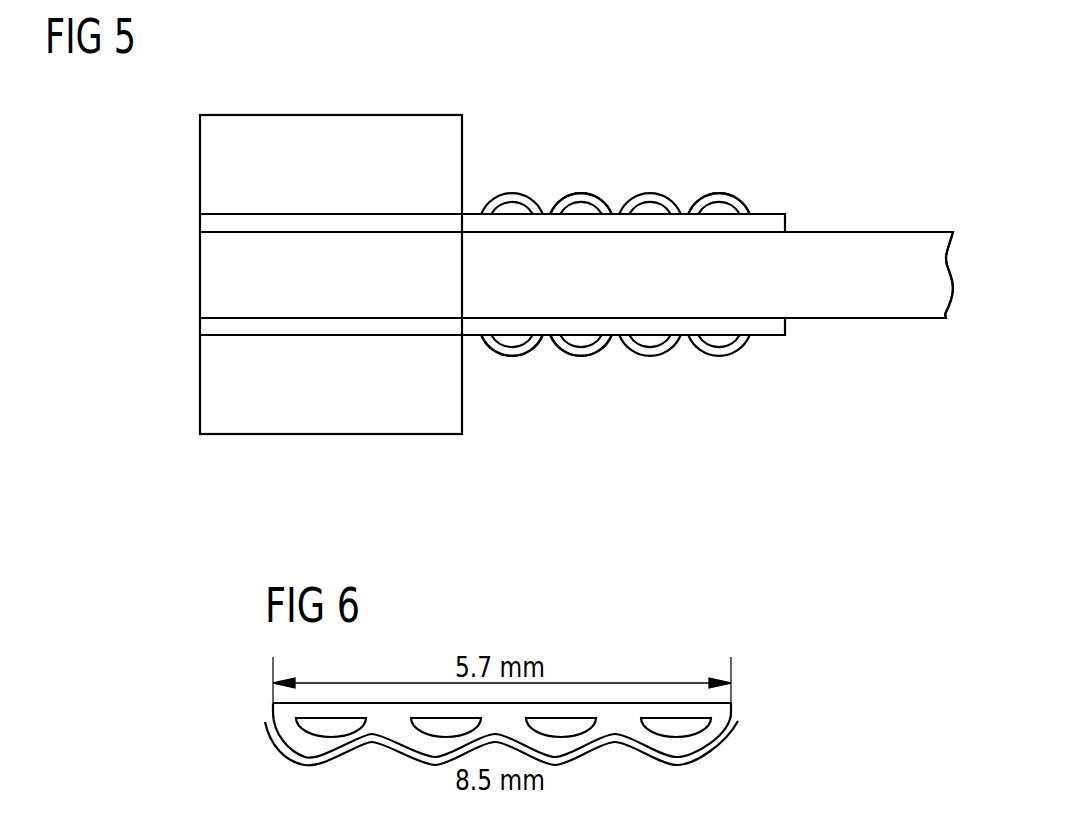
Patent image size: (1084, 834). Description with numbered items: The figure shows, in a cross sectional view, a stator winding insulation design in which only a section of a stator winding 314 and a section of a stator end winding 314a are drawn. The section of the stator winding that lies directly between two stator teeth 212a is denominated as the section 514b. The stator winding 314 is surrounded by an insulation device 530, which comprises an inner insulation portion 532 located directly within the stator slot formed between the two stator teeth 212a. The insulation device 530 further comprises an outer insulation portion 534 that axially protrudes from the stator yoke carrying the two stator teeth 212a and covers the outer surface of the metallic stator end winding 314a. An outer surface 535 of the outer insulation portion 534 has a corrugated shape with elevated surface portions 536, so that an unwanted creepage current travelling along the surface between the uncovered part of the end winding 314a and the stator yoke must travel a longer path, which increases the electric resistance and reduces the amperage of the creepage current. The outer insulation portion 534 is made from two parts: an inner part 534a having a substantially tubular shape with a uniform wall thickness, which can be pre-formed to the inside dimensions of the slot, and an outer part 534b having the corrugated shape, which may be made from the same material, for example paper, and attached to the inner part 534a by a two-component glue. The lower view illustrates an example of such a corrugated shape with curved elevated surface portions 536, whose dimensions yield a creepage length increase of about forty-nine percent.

The insulation device 530 is at (165, 219).
The stator winding 314 is at (150, 269).
The stator end winding 314a is at (917, 310).
The section of the stator winding 514b is at (207, 292).
The inner insulation portion 532 is at (331, 223).
The stator teeth 212a is at (462, 150).
The outer insulation portion 534 is at (654, 182).
The inner part 534a is at (785, 325).
The outer part 534b is at (555, 345).
The outer surface 535 is at (615, 212).
The elevated surface portions 536 is at (717, 193).